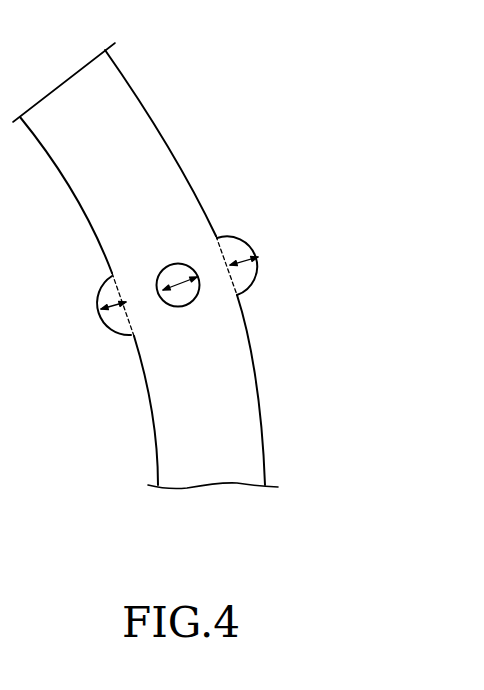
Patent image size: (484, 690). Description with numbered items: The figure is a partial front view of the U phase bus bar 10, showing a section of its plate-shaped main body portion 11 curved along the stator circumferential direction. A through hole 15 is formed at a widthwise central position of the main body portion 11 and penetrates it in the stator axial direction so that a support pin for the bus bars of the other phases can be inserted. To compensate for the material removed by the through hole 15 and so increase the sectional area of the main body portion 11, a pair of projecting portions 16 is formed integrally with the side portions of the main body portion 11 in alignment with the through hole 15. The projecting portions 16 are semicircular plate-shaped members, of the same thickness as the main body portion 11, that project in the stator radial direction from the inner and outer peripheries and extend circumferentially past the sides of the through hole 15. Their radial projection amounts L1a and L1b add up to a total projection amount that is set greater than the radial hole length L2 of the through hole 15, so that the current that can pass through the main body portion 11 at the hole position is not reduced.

The U phase bus bar 10 is at (223, 247).
The main body portion 11 is at (153, 150).
The through hole 15 is at (192, 233).
The projecting portion 16 is at (235, 319).
The hole length L2 is at (175, 277).
The projection amount of inside projecting portion L1a is at (100, 299).
The projection amount of outside projecting portion L1b is at (257, 253).